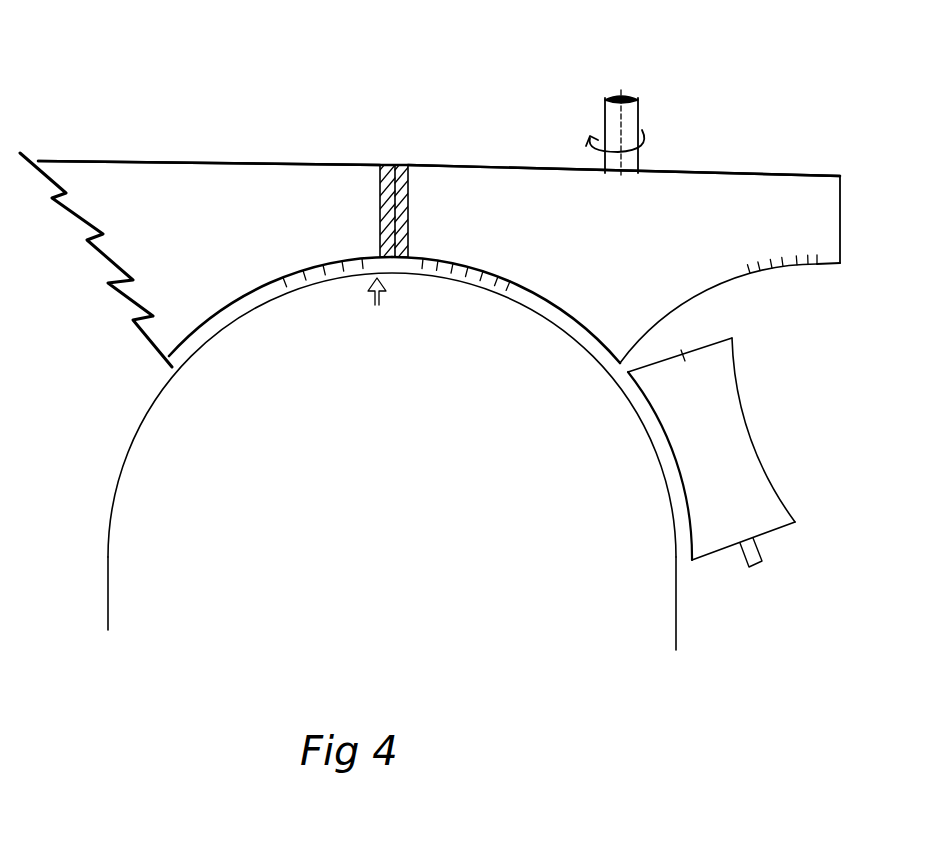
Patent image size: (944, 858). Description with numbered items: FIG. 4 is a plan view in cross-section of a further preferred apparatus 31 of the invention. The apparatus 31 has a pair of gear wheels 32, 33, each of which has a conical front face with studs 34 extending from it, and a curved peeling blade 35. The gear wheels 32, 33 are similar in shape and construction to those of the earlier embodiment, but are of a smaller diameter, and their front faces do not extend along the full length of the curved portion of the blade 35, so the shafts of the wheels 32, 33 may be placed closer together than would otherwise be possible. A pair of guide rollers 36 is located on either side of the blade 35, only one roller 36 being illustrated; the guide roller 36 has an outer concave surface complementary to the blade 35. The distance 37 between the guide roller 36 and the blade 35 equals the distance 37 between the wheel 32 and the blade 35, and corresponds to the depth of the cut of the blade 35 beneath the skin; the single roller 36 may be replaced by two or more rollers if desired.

The apparatus 31 is at (387, 105).
The gear wheel 32 is at (676, 193).
The gear wheel 33 is at (220, 177).
The studs 34 is at (815, 270).
The curved peeling blade 35 is at (541, 325).
The guide roller 36 is at (700, 465).
The distance 37 is at (224, 311).